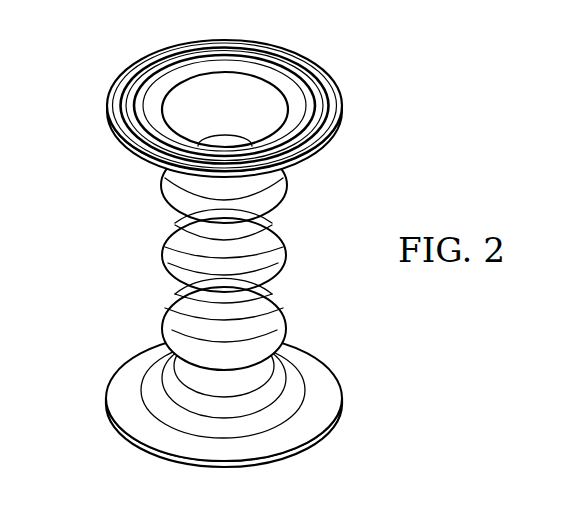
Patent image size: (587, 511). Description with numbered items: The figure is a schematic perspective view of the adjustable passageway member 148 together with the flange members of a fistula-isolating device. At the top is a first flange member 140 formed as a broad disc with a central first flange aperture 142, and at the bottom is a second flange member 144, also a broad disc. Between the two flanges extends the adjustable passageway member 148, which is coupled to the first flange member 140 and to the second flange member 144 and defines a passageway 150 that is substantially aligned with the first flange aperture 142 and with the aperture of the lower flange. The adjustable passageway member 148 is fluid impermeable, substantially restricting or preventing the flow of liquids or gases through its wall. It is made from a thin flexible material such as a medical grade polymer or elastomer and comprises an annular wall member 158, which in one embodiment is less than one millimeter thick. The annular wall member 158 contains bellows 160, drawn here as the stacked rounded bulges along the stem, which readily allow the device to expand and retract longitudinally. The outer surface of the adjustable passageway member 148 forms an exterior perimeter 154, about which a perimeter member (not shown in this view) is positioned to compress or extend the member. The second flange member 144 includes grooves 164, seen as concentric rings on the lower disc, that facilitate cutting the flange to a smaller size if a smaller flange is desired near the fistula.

The first flange member 140 is at (226, 88).
The first flange aperture 142 is at (284, 112).
The second flange member 144 is at (329, 384).
The adjustable passageway member 148 is at (230, 258).
The passageway 150 is at (175, 103).
The exterior perimeter 154 is at (283, 270).
The annular wall member 158 is at (285, 317).
The bellows 160 is at (165, 240).
The grooves 164 is at (293, 63).